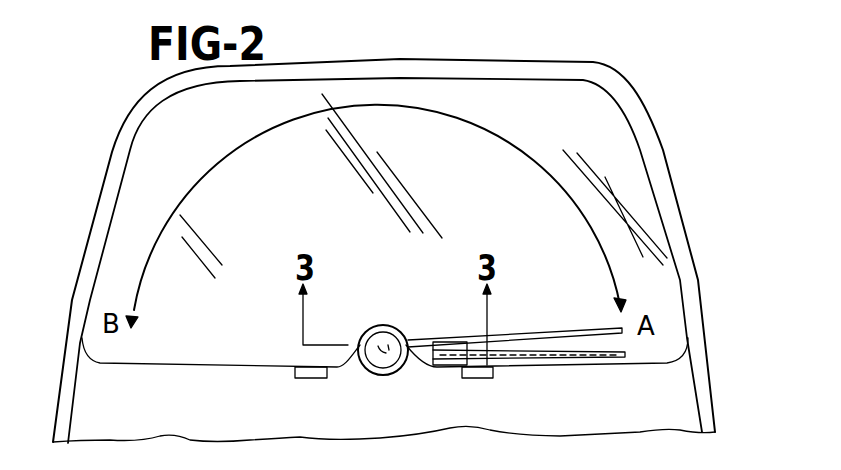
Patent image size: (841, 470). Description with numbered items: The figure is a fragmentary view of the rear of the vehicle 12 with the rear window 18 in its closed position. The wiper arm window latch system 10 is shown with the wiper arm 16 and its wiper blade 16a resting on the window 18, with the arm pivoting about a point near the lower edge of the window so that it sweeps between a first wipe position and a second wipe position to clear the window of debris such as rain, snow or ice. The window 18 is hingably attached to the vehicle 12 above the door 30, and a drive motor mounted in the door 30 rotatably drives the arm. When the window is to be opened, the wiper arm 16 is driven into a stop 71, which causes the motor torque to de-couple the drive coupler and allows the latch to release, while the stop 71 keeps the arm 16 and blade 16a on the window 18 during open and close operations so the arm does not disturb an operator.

The wiper arm window latch system 10 is at (386, 320).
The vehicle 12 is at (97, 193).
The wiper arm 16 is at (510, 335).
The wiper blade 16a is at (582, 337).
The rear window 18 is at (636, 187).
The door 30 is at (156, 425).
The stop 71 is at (462, 378).